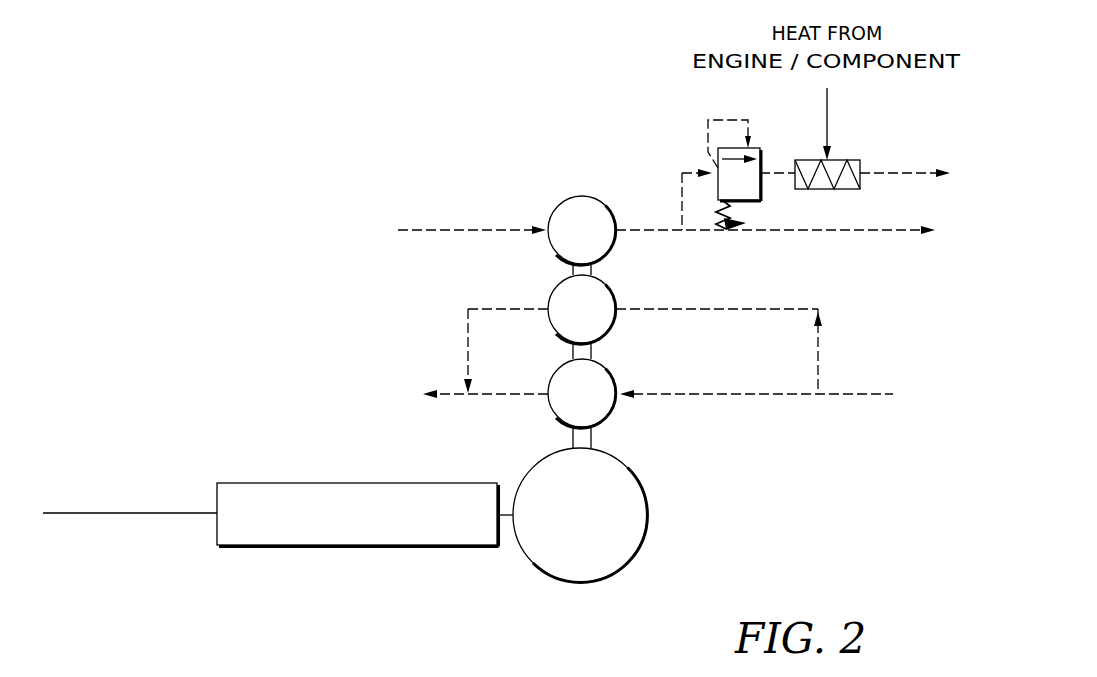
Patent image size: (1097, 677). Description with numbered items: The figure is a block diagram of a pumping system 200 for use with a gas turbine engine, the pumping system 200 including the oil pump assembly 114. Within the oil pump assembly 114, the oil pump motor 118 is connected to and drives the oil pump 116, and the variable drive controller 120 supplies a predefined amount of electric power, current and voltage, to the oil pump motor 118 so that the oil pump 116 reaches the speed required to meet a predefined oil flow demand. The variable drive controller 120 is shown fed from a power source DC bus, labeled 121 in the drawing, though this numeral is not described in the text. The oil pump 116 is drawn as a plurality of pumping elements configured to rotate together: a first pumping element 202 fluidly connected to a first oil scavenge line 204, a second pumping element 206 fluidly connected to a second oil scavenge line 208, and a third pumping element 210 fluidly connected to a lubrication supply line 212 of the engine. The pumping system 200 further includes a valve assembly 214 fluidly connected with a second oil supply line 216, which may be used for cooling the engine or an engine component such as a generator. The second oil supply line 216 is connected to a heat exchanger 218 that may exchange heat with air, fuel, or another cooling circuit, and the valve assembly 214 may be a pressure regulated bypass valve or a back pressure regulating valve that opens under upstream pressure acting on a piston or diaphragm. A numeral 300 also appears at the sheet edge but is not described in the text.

The oil pump assembly 114 is at (320, 92).
The oil pump 116 is at (470, 155).
The oil pump motor 118 is at (533, 467).
The variable drive controller 120 is at (358, 483).
The power source DC bus 121 is at (110, 513).
The pumping system 200 is at (643, 85).
The first pumping element 202 is at (557, 370).
The first oil scavenge line 204 is at (730, 395).
The second pumping element 206 is at (557, 287).
The second oil scavenge line 208 is at (706, 308).
The third pumping element 210 is at (557, 208).
The lubrication supply line 212 is at (852, 232).
The valve assembly 214 is at (750, 190).
The second oil supply line 216 is at (907, 172).
The heat exchanger 218 is at (848, 158).
The control method 300 is at (74, 673).